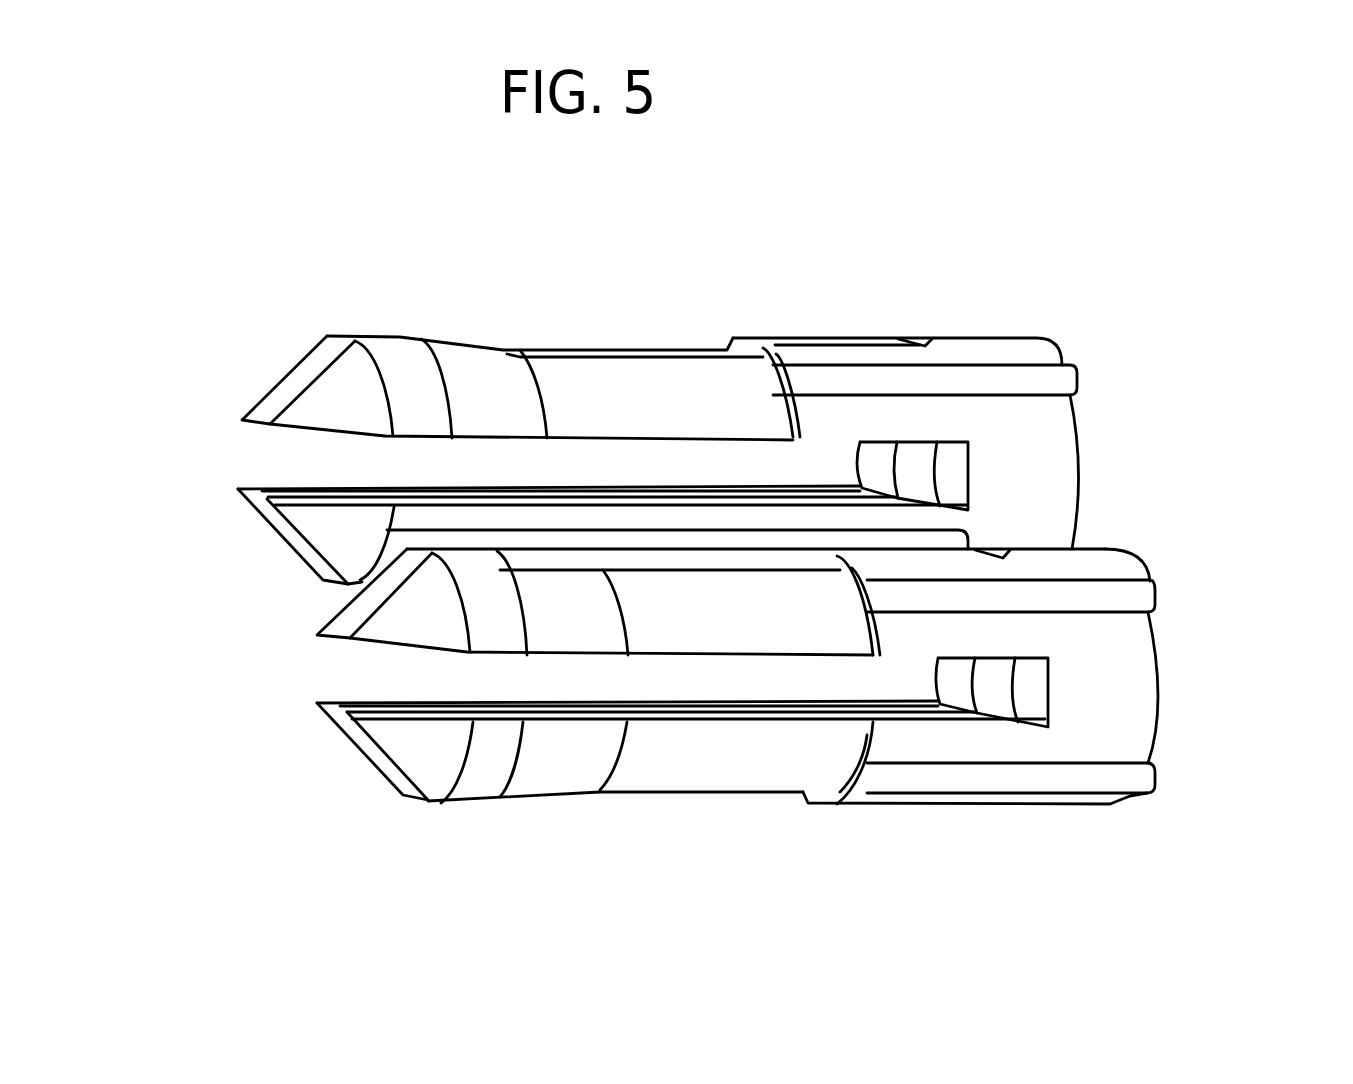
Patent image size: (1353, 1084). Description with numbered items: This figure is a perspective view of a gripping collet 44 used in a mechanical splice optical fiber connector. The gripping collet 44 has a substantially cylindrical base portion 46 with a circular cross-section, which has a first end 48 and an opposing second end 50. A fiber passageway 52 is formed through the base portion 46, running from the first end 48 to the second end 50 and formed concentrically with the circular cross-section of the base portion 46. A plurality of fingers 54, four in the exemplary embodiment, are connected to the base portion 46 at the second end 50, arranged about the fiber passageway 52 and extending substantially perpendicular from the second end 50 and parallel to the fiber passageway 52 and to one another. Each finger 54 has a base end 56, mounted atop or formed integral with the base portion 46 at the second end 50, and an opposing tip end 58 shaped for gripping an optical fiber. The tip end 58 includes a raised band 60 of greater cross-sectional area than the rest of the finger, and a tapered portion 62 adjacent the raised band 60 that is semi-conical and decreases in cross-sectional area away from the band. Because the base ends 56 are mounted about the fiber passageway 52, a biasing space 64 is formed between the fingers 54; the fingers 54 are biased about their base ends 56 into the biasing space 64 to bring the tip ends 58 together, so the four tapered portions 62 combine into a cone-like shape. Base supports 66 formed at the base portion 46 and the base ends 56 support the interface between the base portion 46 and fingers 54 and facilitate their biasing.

The gripping collet 44 is at (190, 185).
The base portion 46 is at (1013, 348).
The first end 48 is at (1160, 683).
The second end 50 is at (958, 477).
The fiber passageway 52 is at (922, 474).
The fingers 54 is at (653, 348).
The base end 56 is at (832, 338).
The tip end 58 is at (390, 333).
The raised band 60 is at (410, 388).
The tapered portion 62 is at (258, 398).
The biasing space 64 is at (330, 462).
The base supports 66 is at (1077, 380).